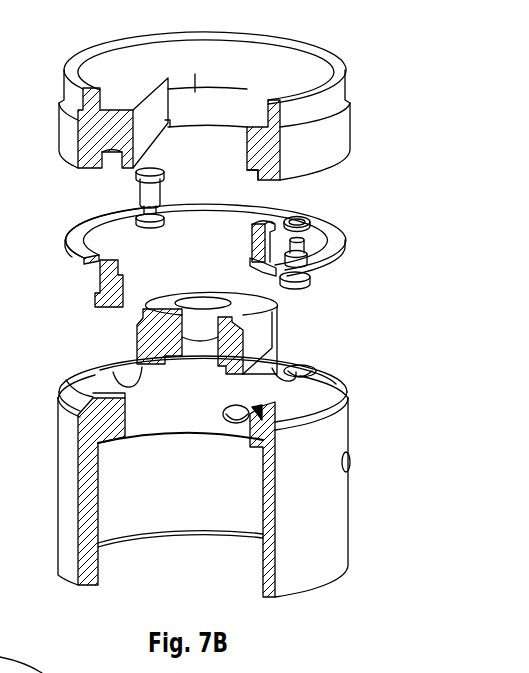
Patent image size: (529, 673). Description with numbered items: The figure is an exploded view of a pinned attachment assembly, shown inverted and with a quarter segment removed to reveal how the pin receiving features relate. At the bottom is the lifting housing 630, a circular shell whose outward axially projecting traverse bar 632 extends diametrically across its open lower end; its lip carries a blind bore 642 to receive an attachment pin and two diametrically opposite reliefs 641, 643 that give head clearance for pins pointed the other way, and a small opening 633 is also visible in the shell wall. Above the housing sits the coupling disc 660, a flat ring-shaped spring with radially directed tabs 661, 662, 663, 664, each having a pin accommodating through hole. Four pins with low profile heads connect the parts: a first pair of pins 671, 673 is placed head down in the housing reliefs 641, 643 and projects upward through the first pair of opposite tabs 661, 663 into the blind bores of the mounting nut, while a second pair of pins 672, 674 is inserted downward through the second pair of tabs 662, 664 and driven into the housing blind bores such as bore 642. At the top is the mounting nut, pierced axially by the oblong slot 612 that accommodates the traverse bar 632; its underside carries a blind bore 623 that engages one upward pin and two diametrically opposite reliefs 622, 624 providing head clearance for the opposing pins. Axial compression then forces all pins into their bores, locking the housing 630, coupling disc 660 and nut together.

The oblong slot 612 is at (153, 113).
The relief 622 is at (254, 177).
The blind bore 623 is at (108, 165).
The relief 624 is at (168, 127).
The attachment pin 674 is at (148, 190).
The tab 664 is at (97, 218).
The tab 663 is at (100, 258).
The attachment pin 673 is at (98, 287).
The coupling disc 660 is at (205, 231).
The tab 661 is at (300, 220).
The tab 662 is at (252, 263).
The attachment pin 671 is at (312, 282).
The attachment pin 672 is at (251, 233).
The traverse bar 632 is at (137, 353).
The relief 643 is at (76, 386).
The relief 641 is at (300, 370).
The aperture 633 is at (352, 461).
The blind bore 642 is at (253, 414).
The lifting housing 630 is at (211, 494).